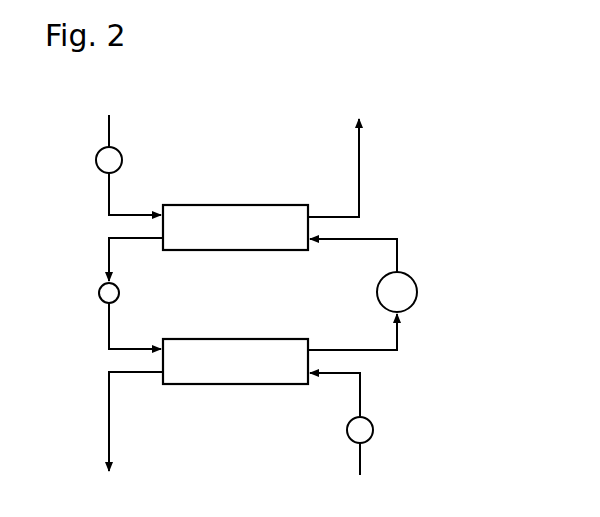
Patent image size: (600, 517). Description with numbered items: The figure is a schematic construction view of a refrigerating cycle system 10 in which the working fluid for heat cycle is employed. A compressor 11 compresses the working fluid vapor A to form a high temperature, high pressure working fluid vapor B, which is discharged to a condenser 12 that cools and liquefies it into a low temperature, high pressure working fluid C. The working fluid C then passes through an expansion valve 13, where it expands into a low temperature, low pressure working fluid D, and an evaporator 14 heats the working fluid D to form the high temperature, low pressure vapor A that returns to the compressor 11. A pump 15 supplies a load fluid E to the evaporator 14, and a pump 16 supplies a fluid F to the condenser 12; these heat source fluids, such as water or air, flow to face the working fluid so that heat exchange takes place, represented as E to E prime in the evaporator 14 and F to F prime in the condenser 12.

The refrigerating cycle system 10 is at (219, 151).
The compressor 11 is at (417, 292).
The condenser 12 is at (250, 205).
The expansion valve 13 is at (99, 291).
The evaporator 14 is at (250, 339).
The pump 15 is at (373, 430).
The pump 16 is at (96, 158).